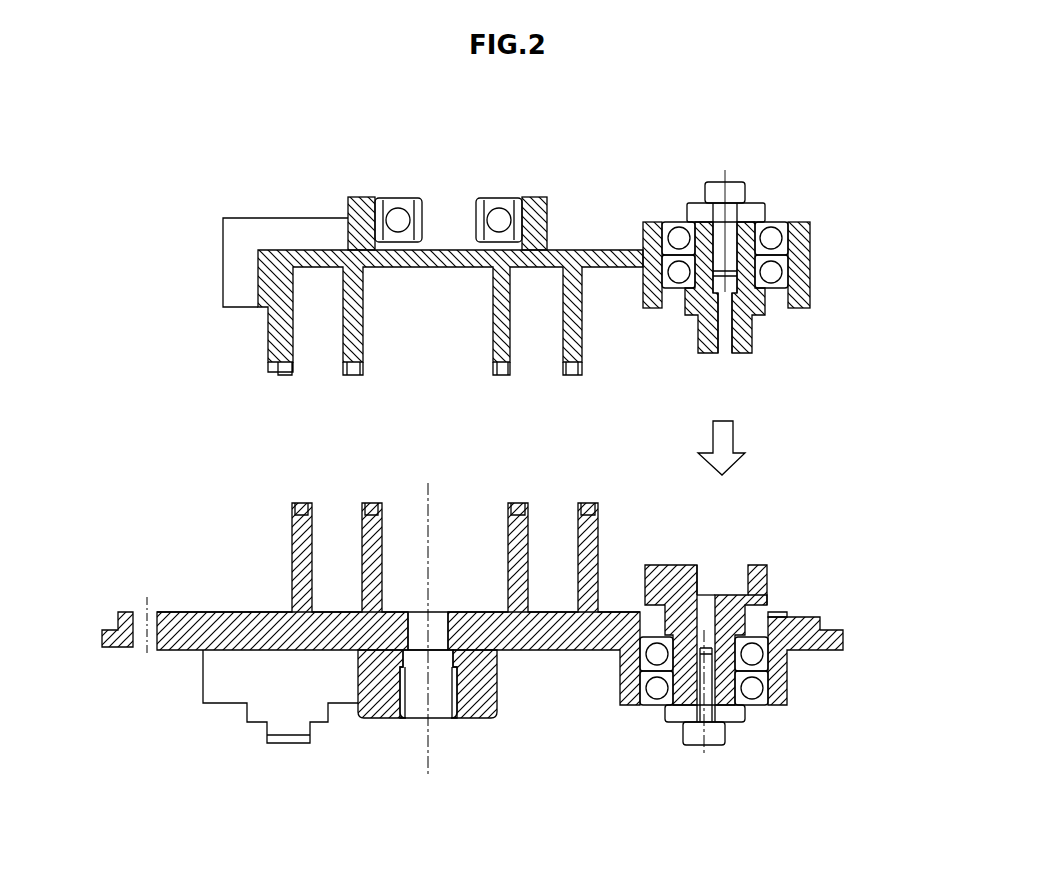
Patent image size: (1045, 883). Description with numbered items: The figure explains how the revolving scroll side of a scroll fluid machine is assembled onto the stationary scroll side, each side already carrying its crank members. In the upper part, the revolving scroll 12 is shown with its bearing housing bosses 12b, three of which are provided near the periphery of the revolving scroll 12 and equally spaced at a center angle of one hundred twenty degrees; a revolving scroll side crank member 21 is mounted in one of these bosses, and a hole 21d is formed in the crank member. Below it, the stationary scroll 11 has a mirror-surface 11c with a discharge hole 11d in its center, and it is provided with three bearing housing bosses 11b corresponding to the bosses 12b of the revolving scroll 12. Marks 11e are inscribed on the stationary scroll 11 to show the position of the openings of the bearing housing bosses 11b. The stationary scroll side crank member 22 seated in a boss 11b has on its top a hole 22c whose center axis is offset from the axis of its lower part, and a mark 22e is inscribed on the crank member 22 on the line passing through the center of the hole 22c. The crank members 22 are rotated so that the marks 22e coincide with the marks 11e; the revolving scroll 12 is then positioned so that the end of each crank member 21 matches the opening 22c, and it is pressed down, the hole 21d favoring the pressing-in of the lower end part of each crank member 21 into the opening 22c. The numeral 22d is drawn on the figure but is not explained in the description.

The stationary scroll 11 is at (193, 633).
The bearing housing bosses 11b is at (228, 705).
The mirror-surface 11c is at (245, 611).
The discharge hole 11d is at (435, 614).
The marks 11e is at (774, 620).
The revolving scroll 12 is at (279, 258).
The bearing housing bosses 12b is at (222, 262).
The revolving scroll side crank member 21 is at (743, 332).
The hole 21d is at (720, 318).
The stationary scroll side crank member 22 is at (769, 583).
The hole 22c is at (706, 560).
The shaft slot 22d is at (710, 598).
The mark 22e is at (769, 603).